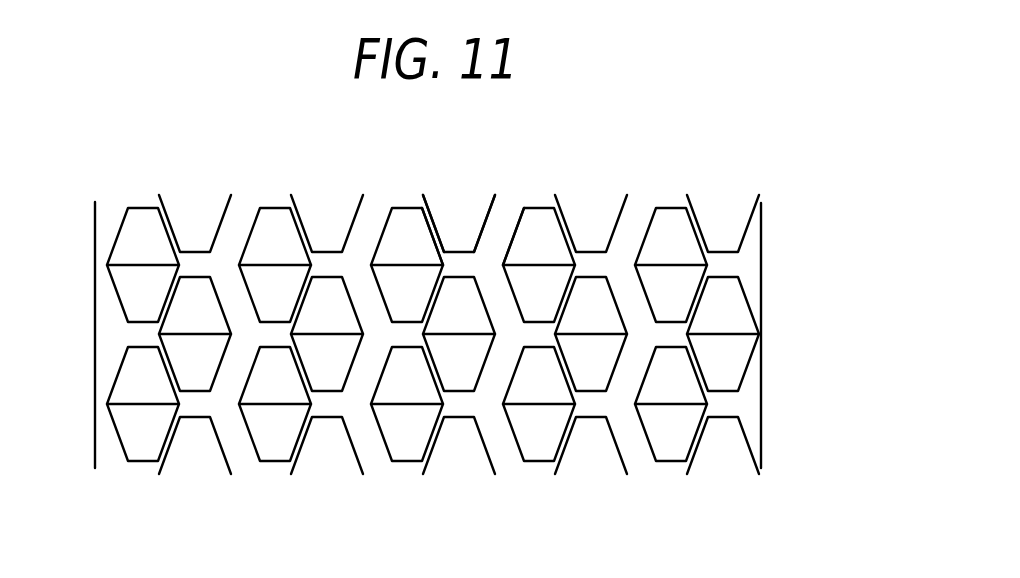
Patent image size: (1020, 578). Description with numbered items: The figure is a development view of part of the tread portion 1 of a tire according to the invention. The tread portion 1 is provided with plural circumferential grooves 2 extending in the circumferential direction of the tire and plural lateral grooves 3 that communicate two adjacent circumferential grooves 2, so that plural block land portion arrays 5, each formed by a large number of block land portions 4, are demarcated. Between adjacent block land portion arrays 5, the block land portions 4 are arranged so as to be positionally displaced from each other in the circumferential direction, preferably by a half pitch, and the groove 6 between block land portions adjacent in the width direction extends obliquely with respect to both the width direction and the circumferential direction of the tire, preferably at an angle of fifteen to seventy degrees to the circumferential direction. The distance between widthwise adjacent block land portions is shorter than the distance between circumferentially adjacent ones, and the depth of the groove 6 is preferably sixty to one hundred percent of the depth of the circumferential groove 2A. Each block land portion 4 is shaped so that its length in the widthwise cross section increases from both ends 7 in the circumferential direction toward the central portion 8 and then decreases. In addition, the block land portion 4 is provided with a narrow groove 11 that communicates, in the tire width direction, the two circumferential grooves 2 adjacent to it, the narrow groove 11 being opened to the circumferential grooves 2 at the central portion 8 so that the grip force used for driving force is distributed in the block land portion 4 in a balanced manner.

The tread portion 1 is at (632, 165).
The circumferential groove 2 is at (422, 207).
The circumferential groove 2A is at (503, 218).
The lateral groove 3 is at (400, 337).
The block land portion 4 is at (418, 249).
The block land portion array 5 is at (535, 468).
The groove between block land portions adjacent to each other in the width direction 6 is at (442, 397).
The end of the block land portion in the circumferential direction of the tire 7 is at (532, 207).
The central portion of the block land portion 8 is at (503, 265).
The narrow groove 11 is at (392, 270).